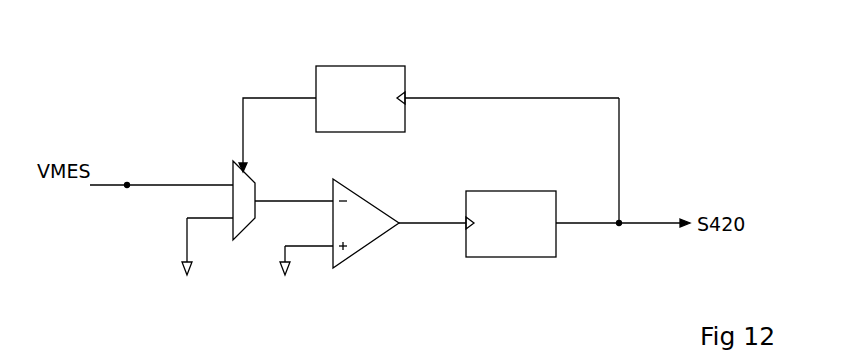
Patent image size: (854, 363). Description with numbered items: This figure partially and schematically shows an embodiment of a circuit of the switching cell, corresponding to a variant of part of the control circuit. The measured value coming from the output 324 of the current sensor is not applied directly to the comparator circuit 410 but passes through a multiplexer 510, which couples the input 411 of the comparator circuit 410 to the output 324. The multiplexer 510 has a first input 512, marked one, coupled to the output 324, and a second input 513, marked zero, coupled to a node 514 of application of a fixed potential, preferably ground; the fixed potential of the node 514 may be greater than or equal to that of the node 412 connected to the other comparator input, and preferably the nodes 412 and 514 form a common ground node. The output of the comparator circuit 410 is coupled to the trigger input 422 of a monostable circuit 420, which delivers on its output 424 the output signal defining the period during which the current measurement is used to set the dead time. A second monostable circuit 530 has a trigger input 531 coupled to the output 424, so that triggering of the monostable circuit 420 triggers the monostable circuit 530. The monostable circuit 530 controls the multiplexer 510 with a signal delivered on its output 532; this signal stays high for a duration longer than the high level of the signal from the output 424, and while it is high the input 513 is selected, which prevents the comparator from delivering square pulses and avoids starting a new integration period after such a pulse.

The output of sensor 324 is at (126, 190).
The multiplexer 510 is at (248, 226).
The input of multiplexer 512 is at (230, 183).
The input of multiplexer 513 is at (240, 222).
The node of application of a fixed potential 514 is at (188, 278).
The comparator circuit 410 is at (361, 202).
The input of comparator circuit 411 is at (330, 200).
The node 412 is at (291, 278).
The monostable circuit 420 is at (520, 247).
The trigger input 422 is at (466, 227).
The output 424 is at (558, 225).
The monostable circuit 530 is at (367, 75).
The trigger input 531 is at (407, 100).
The output 532 is at (316, 97).